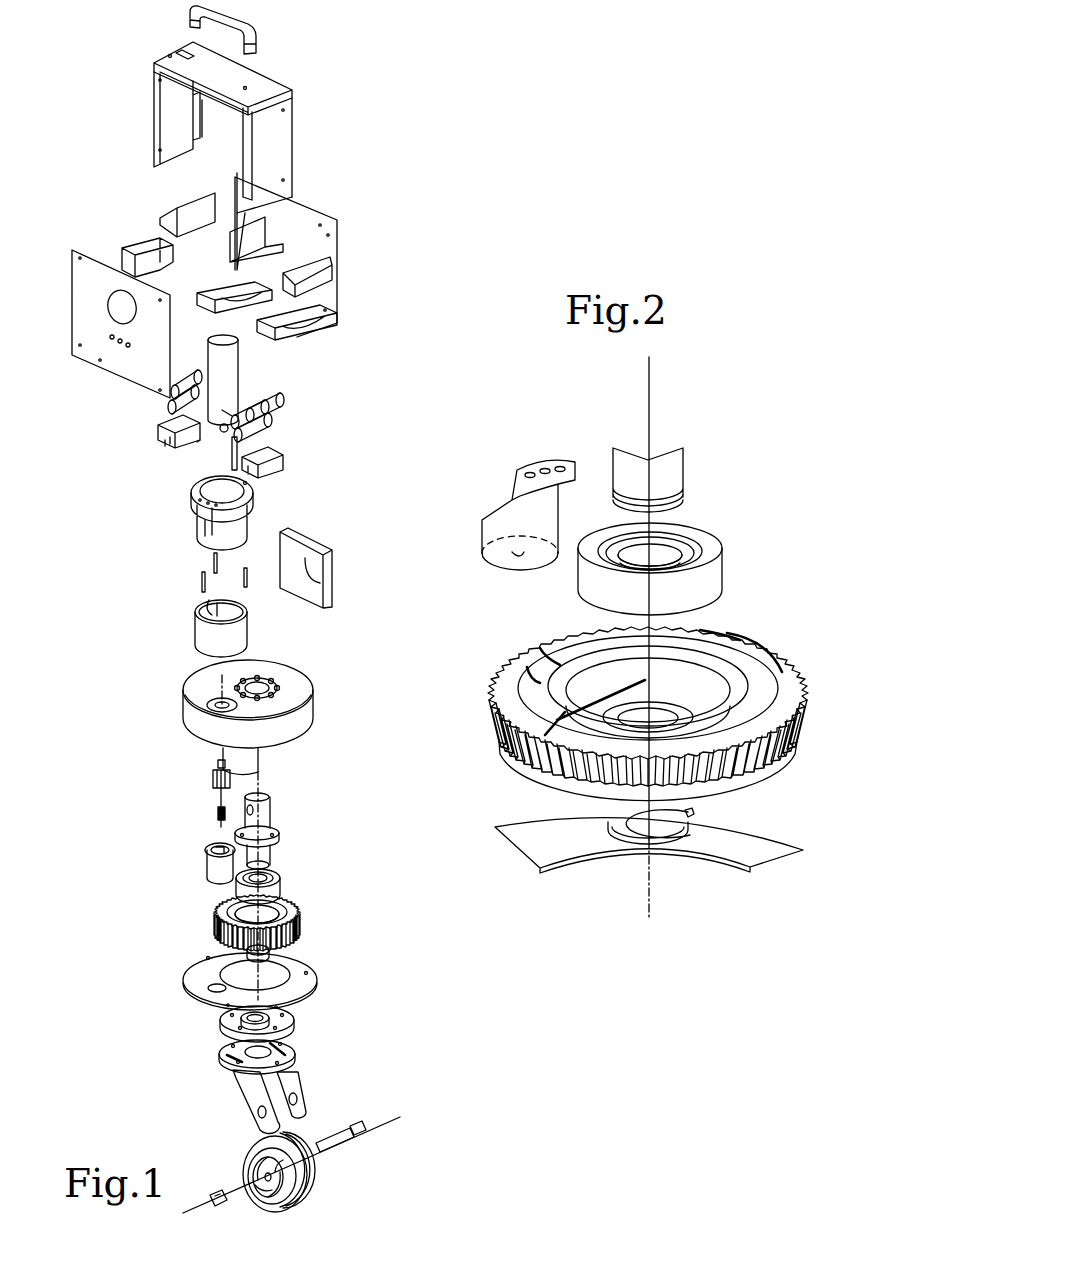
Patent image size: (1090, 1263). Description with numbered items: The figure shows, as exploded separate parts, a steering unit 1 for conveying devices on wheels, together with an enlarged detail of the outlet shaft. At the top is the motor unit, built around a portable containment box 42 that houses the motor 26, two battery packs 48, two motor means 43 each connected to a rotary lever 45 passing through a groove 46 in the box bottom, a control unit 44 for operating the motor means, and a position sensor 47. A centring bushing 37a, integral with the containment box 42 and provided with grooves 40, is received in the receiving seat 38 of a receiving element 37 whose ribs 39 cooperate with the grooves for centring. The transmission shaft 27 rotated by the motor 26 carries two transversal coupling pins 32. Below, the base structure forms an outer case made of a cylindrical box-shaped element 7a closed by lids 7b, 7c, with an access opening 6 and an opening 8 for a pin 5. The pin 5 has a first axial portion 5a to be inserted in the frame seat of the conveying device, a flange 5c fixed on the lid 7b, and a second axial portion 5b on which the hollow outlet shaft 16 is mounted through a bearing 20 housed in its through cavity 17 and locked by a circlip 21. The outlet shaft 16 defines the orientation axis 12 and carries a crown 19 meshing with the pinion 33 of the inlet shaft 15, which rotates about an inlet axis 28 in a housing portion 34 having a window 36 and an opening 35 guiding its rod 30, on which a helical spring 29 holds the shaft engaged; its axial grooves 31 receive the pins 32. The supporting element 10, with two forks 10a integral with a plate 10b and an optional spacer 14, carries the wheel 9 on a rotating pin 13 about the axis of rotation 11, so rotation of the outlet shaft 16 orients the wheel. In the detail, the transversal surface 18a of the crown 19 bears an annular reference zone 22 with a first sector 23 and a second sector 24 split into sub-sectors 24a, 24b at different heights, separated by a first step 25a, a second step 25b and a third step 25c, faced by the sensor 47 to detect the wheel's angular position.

In FIG. 1, the steering unit 1 is at (412, 166).
In FIG. 1, the portable containment box 42 is at (268, 86).
In FIG. 1, the groove 46 is at (238, 292).
In FIG. 1, the battery pack 48 is at (160, 375).
In FIG. 1, the motor 26 is at (228, 357).
In FIG. 1, the transversal coupling pin 32 is at (230, 418).
In FIG. 1, the motor means 43 is at (160, 420).
In FIG. 1, the position sensor 47 is at (238, 445).
In FIG. 1, the lever 45 is at (190, 447).
In FIG. 1, the transmission shaft 27 is at (220, 432).
In FIG. 1, the centring bushing 37a is at (258, 497).
In FIG. 1, the grooves 40 is at (240, 523).
In FIG. 1, the control unit 44 is at (300, 556).
In FIG. 1, the ribs 39 is at (215, 605).
In FIG. 1, the receiving seat 38 is at (205, 605).
In FIG. 1, the receiving element 37 is at (205, 635).
In FIG. 1, the box-shaped element 7a is at (308, 718).
In FIG. 1, the lid 7b is at (295, 673).
In FIG. 1, the opening for inserting the pin 8 is at (260, 680).
In FIG. 1, the access opening 6 is at (215, 700).
In FIG. 1, the inlet axis 28 is at (215, 760).
In FIG. 1, the orientation axis 12 is at (262, 750).
In FIG. 2, the orientation axis 12 is at (652, 405).
In FIG. 1, the axial groove 31 is at (218, 763).
In FIG. 1, the pinion 33 is at (213, 780).
In FIG. 1, the inlet shaft 15 is at (200, 788).
In FIG. 1, the rod 30 is at (221, 800).
In FIG. 1, the helical spring 29 is at (220, 812).
In FIG. 1, the first axial portion 5a is at (262, 812).
In FIG. 1, the flange 5c is at (275, 830).
In FIG. 1, the pin 5 is at (240, 824).
In FIG. 1, the second axial portion 5b is at (260, 858).
In FIG. 2, the second axial portion 5b is at (672, 475).
In FIG. 1, the housing portion 34 is at (205, 862).
In FIG. 1, the bearing 20 is at (237, 878).
In FIG. 2, the bearing 20 is at (708, 553).
In FIG. 1, the through cavity 17 is at (300, 913).
In FIG. 2, the through cavity 17 is at (770, 745).
In FIG. 1, the outlet shaft 16 is at (262, 950).
In FIG. 2, the outlet shaft 16 is at (787, 645).
In FIG. 1, the circlip 21 is at (210, 955).
In FIG. 2, the circlip 21 is at (686, 830).
In FIG. 1, the lid 7c is at (296, 988).
In FIG. 2, the lid 7c is at (535, 845).
In FIG. 1, the spacer 14 is at (225, 1020).
In FIG. 1, the plate 10b is at (290, 1048).
In FIG. 1, the forks 10a is at (300, 1105).
In FIG. 1, the supporting element 10 is at (235, 1088).
In FIG. 1, the wheel 9 is at (312, 1195).
In FIG. 1, the axis of rotation 11 is at (395, 1120).
In FIG. 1, the rotating pin 13 is at (345, 1150).
In FIG. 2, the window 36 is at (575, 462).
In FIG. 2, the opening 35 is at (515, 552).
In FIG. 2, the crown 19 is at (770, 750).
In FIG. 2, the second sector 24 is at (543, 658).
In FIG. 2, the sub-sector 24a is at (523, 672).
In FIG. 2, the sub-sector 24b is at (735, 735).
In FIG. 2, the first step 25a is at (555, 700).
In FIG. 2, the second step 25b is at (597, 728).
In FIG. 2, the third step 25c is at (725, 645).
In FIG. 2, the transversal surface 18a is at (757, 630).
In FIG. 2, the first sector 23 is at (553, 707).
In FIG. 2, the annular reference zone 22 is at (640, 733).